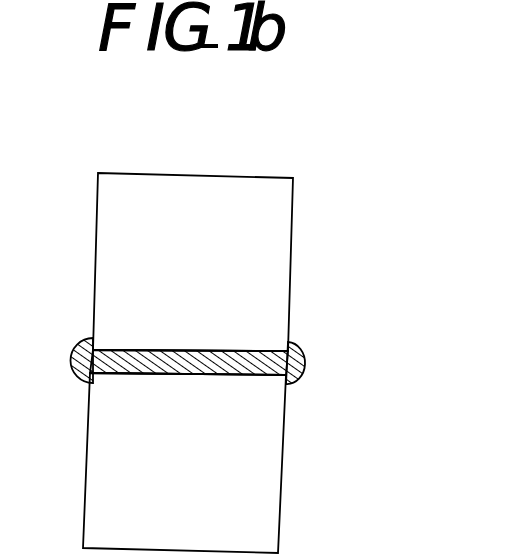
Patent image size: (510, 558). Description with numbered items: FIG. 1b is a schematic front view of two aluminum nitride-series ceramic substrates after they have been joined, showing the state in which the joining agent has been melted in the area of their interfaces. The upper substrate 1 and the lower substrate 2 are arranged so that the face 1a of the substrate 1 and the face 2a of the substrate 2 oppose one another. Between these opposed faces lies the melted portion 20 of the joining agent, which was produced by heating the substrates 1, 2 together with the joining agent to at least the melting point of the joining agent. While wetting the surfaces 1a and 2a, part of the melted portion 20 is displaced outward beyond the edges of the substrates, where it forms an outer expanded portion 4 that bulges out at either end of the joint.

The substrate 1 is at (255, 245).
The face of substrate to be joined 1a is at (114, 350).
The substrate 2 is at (245, 487).
The face of substrate to be joined 2a is at (140, 373).
The melted portion of the joining agent 20 is at (205, 373).
The outer expanded portion 4 is at (303, 357).